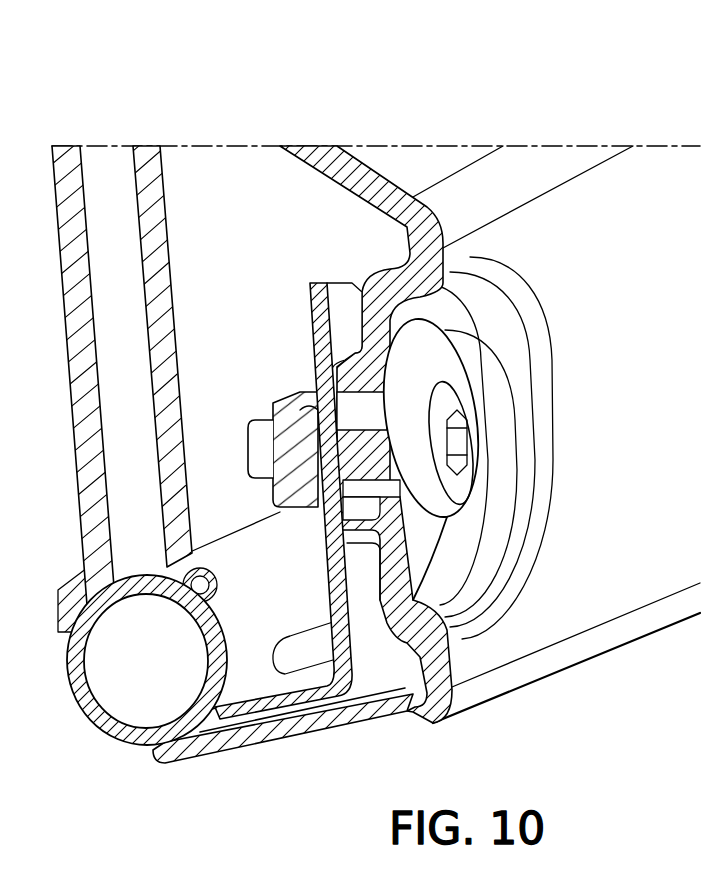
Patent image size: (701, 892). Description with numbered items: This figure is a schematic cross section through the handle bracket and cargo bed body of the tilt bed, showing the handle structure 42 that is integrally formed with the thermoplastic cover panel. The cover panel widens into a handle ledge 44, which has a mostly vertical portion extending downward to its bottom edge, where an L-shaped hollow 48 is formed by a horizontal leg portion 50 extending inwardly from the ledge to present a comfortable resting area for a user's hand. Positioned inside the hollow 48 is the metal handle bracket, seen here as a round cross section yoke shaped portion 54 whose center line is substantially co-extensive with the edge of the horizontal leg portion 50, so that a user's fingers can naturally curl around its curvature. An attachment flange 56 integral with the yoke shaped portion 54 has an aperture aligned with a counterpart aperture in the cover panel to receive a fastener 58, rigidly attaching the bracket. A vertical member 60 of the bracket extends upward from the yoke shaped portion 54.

The handle structure 42 is at (330, 128).
The handle ledge 44 is at (630, 266).
The L-shaped hollow 48 is at (403, 692).
The horizontal leg portion 50 is at (230, 752).
The yoke shaped portion 54 is at (132, 688).
The attachment flange 56 is at (367, 657).
The fastener 58 is at (445, 530).
The vertical member 60 is at (110, 425).